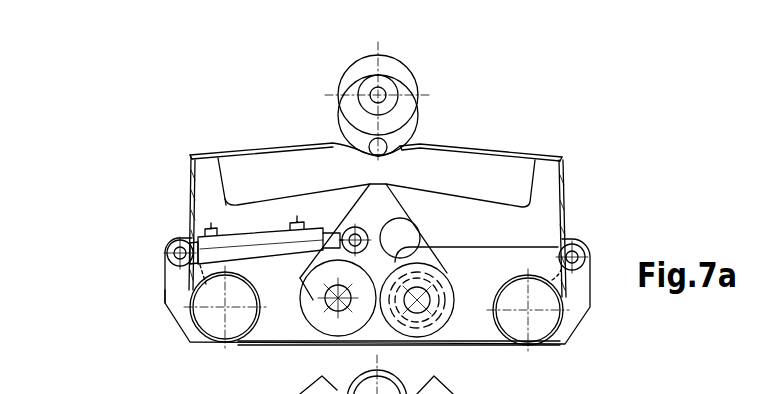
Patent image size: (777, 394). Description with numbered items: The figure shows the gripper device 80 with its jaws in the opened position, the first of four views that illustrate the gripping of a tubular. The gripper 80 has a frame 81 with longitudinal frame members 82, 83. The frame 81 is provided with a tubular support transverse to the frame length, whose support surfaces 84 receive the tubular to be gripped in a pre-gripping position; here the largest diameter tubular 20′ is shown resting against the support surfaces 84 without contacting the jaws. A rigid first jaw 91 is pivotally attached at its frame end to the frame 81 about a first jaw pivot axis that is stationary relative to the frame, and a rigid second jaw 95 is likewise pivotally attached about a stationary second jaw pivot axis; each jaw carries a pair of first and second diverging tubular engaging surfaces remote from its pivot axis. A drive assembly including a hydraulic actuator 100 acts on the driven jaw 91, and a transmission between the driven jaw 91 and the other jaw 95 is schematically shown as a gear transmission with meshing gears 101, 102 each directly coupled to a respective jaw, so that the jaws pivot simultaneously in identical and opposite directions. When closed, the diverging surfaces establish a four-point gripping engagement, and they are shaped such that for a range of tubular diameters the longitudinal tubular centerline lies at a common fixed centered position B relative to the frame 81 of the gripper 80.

The common fixed centered position B is at (373, 93).
The largest diameter tubular 20′ is at (403, 87).
The gripper device 80 is at (122, 322).
The frame 81 is at (486, 289).
The longitudinal frame member 82 is at (533, 342).
The longitudinal frame member 83 is at (216, 342).
The support surface 84 is at (425, 144).
The rigid first jaw 91 is at (458, 221).
The rigid second jaw 95 is at (267, 213).
The hydraulic actuator 100 is at (257, 231).
The meshing gear 101 is at (328, 322).
The meshing gear 102 is at (423, 328).